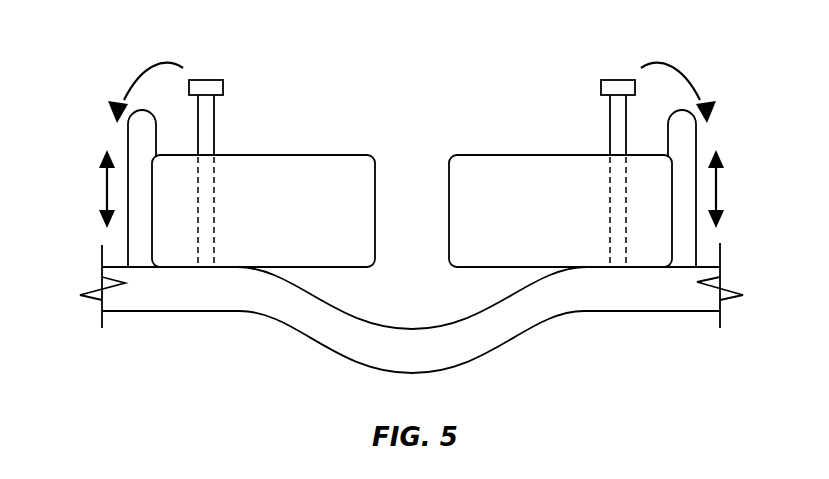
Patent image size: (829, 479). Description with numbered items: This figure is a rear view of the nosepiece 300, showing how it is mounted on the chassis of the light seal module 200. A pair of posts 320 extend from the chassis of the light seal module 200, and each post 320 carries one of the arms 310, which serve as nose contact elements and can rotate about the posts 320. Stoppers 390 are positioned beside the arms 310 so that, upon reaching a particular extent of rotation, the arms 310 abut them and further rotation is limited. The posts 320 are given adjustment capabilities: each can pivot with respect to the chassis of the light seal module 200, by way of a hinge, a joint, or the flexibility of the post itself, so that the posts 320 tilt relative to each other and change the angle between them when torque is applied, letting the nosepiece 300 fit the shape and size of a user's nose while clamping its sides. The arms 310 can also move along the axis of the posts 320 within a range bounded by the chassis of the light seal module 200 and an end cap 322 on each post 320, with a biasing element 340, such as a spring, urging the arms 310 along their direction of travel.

The nosepiece 300 is at (72, 80).
The light seal module 200 is at (135, 287).
The arms 310 is at (333, 170).
The posts 320 is at (210, 123).
The end cap 322 is at (204, 86).
The biasing element 340 is at (203, 270).
The stoppers 390 is at (137, 250).